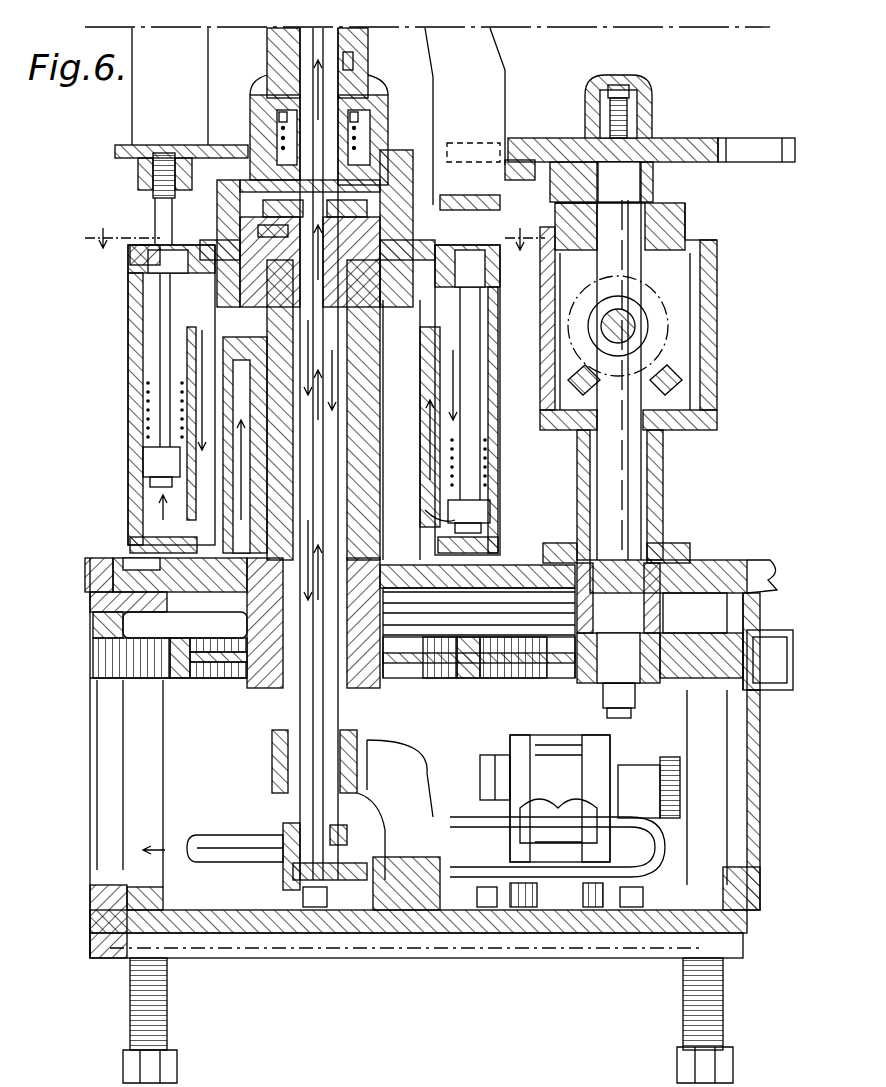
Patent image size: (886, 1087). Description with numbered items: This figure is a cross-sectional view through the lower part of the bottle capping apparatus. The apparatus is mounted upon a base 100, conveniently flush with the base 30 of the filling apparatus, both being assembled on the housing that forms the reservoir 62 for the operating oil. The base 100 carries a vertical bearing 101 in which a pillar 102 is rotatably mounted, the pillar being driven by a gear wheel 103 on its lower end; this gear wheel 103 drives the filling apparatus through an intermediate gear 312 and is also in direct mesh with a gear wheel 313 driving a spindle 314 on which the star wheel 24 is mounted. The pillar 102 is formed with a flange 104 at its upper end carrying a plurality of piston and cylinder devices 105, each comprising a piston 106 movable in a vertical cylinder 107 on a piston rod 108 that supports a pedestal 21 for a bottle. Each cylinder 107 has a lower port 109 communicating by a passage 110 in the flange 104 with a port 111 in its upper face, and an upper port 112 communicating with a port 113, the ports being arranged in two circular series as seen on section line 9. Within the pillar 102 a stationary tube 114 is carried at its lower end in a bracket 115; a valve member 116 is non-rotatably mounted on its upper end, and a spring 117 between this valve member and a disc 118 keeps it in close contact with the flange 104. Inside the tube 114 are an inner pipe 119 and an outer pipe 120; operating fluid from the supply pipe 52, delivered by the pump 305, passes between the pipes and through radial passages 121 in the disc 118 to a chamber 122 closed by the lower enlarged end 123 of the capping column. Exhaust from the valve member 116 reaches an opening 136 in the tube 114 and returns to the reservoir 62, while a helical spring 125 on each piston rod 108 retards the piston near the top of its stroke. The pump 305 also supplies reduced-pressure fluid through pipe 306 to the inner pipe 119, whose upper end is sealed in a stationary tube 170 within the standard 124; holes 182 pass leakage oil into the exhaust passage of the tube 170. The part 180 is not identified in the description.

The section line 9— 9 is at (315, 228).
The pedestal 21 is at (124, 146).
The star wheel 24 is at (650, 136).
The base 30 is at (126, 558).
The supply pipe 52 is at (238, 843).
The reservoir 62 is at (228, 760).
The base 100 is at (745, 565).
The vertical bearing 101 is at (405, 430).
The pillar 102 is at (366, 468).
The gear wheel 103 is at (215, 685).
The flange 104 is at (420, 427).
The piston and cylinder device 105 is at (190, 385).
The piston 106 is at (160, 465).
The vertical cylinder 107 is at (477, 340).
The piston rod 108 is at (160, 367).
The port 109 is at (440, 520).
The passage 110 is at (200, 300).
The port 111 is at (258, 240).
The port 112 is at (250, 290).
The port 113 is at (190, 258).
The stationary tube 114 is at (340, 787).
The bracket 115 is at (383, 742).
The valve member 116 is at (256, 230).
The spring 117 is at (372, 215).
The disc 118 is at (268, 172).
The inner pipe 119 is at (318, 34).
The outer pipe 120 is at (299, 697).
The radial passage 121 is at (372, 165).
The chamber 122 is at (402, 238).
The lower enlarged end 123 is at (392, 222).
The standard 124 is at (352, 55).
The helical spring 125 is at (147, 432).
The opening 136 is at (473, 152).
The stationary tube 170 is at (275, 36).
The housing shoulder 180 is at (384, 110).
The hole 182 is at (352, 62).
The pump 305 is at (568, 752).
The pipe 306 is at (371, 883).
The intermediate gear 312 is at (140, 675).
The gear wheel 313 is at (515, 660).
The spindle 314 is at (606, 524).